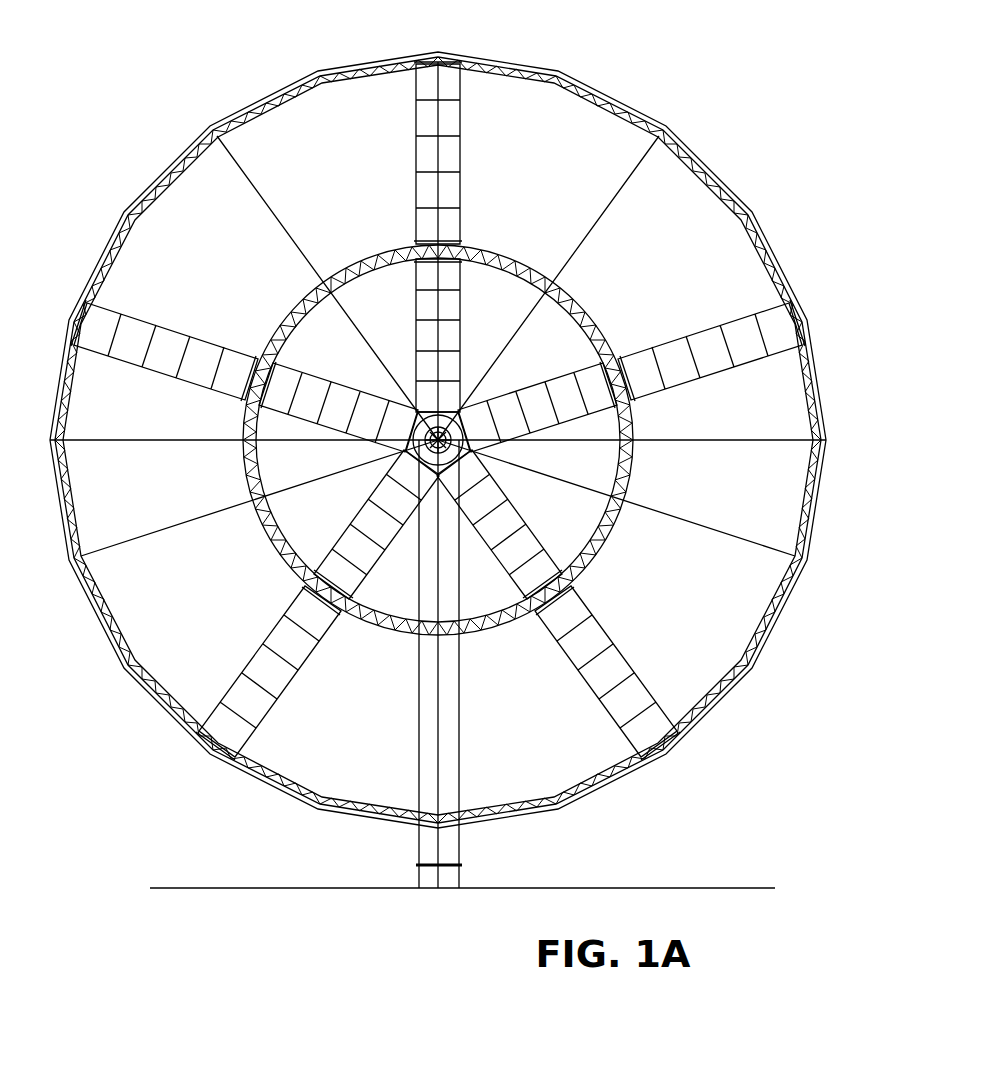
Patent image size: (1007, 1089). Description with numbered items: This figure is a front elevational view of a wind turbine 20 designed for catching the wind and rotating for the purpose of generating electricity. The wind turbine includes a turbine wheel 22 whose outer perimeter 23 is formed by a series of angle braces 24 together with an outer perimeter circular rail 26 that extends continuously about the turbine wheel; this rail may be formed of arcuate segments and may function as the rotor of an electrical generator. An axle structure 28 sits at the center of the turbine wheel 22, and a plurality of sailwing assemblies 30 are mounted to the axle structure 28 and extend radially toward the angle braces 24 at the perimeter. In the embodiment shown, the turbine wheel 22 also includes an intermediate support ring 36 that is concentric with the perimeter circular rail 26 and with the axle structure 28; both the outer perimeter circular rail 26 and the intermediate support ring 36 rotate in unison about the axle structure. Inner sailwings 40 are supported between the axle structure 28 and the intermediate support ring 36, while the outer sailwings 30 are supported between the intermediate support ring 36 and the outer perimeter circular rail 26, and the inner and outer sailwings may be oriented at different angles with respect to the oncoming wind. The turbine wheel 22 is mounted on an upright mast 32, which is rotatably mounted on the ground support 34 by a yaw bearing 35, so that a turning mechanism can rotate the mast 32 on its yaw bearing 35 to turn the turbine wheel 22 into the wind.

The wind turbine 20 is at (623, 75).
The turbine wheel 22 is at (687, 140).
The outer perimeter 23 is at (737, 192).
The angle braces 24 is at (748, 227).
The outer perimeter circular rail 26 is at (801, 547).
The axle structure 28 is at (460, 412).
The sailwing assemblies 30 is at (464, 190).
The mast 32 is at (419, 746).
The ground support 34 is at (460, 879).
The yaw bearing 35 is at (426, 865).
The intermediate support ring 36 is at (601, 548).
The inner sailwings 40 is at (353, 383).